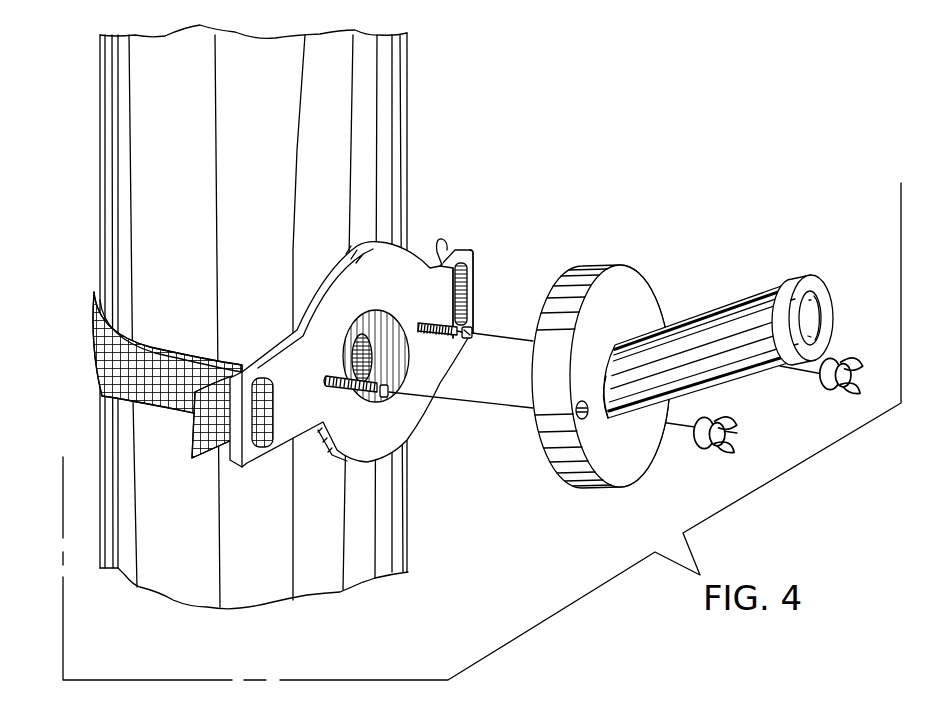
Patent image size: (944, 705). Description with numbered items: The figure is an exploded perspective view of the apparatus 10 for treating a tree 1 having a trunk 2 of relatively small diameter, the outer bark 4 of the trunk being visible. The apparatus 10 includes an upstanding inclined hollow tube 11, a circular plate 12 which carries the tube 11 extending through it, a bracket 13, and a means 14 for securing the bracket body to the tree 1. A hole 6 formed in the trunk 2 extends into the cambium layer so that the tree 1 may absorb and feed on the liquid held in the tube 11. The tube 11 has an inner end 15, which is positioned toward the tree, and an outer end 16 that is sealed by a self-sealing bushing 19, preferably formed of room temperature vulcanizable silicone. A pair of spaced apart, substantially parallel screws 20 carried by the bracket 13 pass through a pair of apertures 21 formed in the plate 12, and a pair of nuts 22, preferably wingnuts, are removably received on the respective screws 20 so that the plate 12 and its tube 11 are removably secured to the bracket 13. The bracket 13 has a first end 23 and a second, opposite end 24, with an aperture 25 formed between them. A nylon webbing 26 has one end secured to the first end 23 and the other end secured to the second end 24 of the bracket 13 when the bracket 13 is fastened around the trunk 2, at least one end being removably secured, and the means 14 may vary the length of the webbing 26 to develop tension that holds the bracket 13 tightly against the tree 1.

The tree 1 is at (427, 131).
The trunk 2 is at (128, 123).
The outer bark 4 is at (377, 88).
The hole 6 is at (367, 357).
The apparatus 10 is at (646, 205).
The hollow tube 11 is at (730, 294).
The circular plate 12 is at (633, 302).
The bracket 13 is at (320, 401).
The means for securing the bracket body to the tree 14 is at (449, 244).
The inner end 15 is at (604, 372).
The outer end 16 is at (766, 281).
The self-sealing bushing 19 is at (808, 285).
The screws 20 is at (449, 343).
The apertures 21 is at (585, 420).
The nuts 22 is at (721, 460).
The first end 23 is at (248, 466).
The second end 24 is at (474, 250).
The aperture 25 is at (396, 333).
The nylon webbing 26 is at (98, 337).